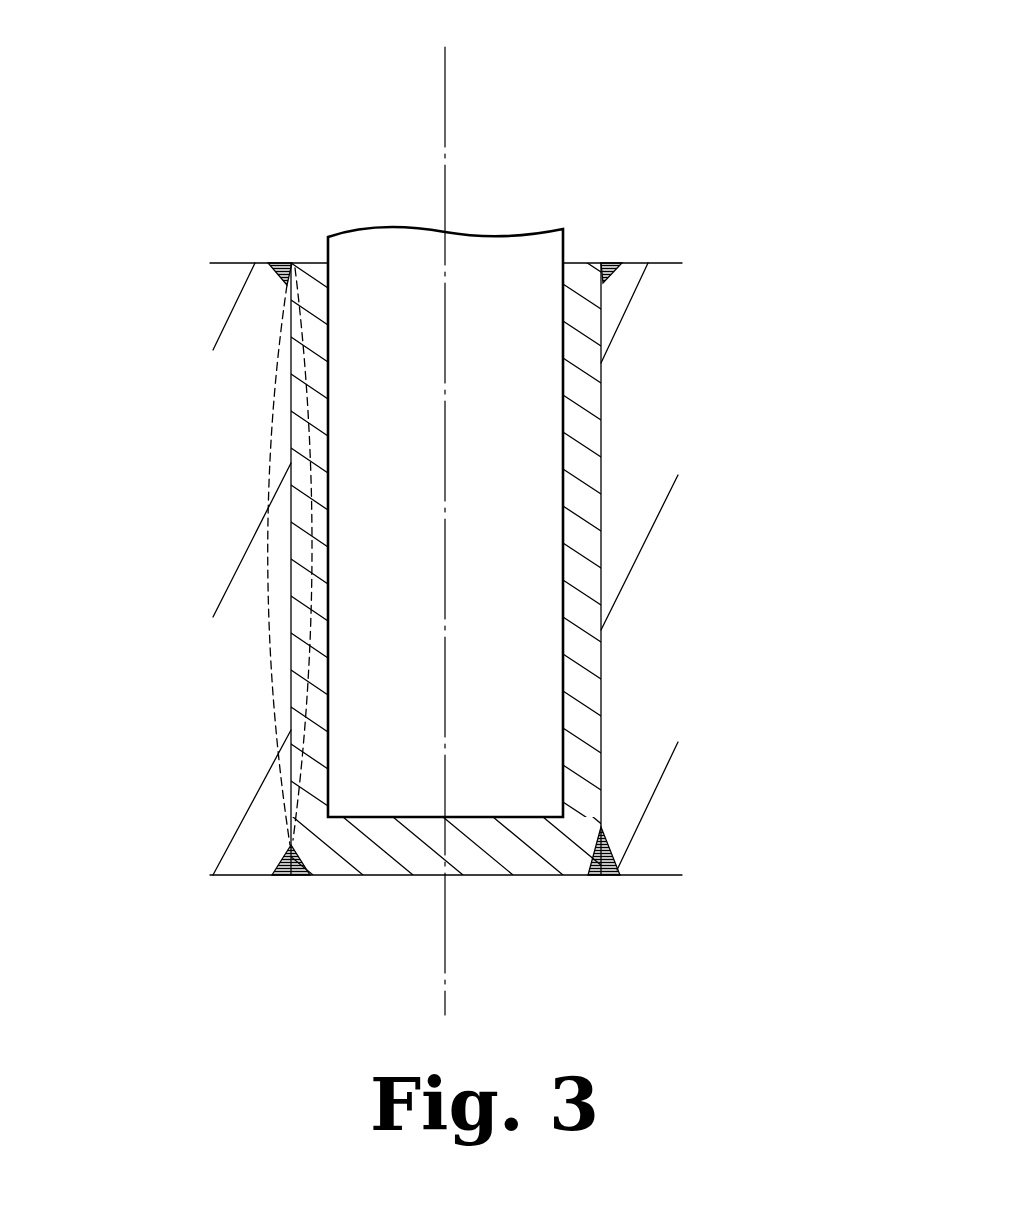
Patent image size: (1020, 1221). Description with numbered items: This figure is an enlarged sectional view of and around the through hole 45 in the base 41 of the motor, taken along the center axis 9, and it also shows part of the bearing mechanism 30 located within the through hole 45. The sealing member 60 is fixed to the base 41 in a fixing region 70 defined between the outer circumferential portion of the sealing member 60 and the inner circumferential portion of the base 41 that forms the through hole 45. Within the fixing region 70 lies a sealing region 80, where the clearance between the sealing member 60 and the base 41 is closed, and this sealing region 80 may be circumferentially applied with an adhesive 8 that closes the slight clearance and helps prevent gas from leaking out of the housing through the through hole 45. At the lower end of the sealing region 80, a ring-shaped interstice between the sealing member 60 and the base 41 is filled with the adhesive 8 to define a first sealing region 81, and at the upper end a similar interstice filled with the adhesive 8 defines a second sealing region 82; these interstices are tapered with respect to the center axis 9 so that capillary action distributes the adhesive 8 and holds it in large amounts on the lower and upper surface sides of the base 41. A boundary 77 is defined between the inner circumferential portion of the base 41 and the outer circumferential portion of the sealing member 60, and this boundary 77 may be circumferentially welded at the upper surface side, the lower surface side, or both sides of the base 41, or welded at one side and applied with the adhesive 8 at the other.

The center axis 9 is at (445, 60).
The bearing mechanism 30 is at (407, 260).
The through hole 45 is at (500, 320).
The boundary 77 is at (288, 246).
The adhesive 8 is at (604, 263).
The second sealing region 82 is at (632, 262).
The fixing region 70 is at (268, 472).
The sealing region 80 is at (268, 634).
The base 41 is at (628, 734).
The first sealing region 81 is at (626, 860).
The sealing member 60 is at (418, 855).